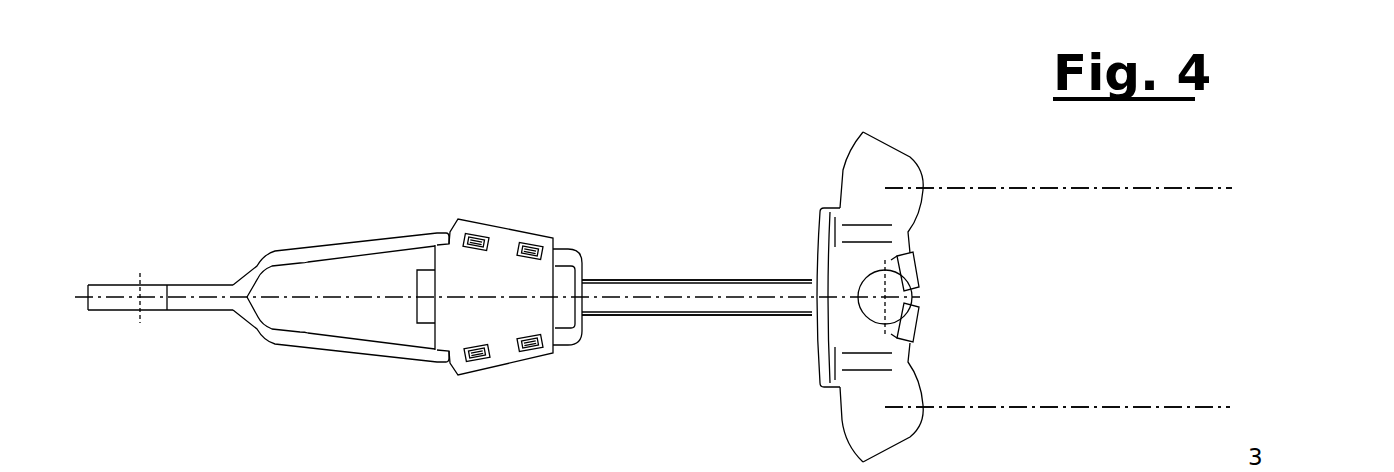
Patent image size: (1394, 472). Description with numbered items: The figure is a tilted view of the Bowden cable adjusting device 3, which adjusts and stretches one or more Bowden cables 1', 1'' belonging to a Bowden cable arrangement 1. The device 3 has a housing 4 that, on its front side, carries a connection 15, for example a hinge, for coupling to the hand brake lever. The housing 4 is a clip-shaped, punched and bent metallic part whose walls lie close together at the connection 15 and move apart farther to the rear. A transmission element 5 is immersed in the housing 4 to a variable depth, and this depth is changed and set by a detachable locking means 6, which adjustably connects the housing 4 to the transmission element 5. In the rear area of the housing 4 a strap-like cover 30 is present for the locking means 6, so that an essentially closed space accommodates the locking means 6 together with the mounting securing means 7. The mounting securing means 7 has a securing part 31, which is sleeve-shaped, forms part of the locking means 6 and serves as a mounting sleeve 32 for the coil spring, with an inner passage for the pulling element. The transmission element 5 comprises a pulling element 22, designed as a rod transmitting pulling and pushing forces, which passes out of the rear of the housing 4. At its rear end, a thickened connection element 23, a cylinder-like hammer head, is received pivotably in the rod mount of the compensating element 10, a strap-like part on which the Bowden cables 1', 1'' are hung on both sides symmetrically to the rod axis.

The Bowden cable 1 is at (1125, 259).
The Bowden cable 1' is at (1058, 225).
The Bowden cable 1'' is at (1057, 374).
The Bowden cable adjusting device 3 is at (470, 221).
The cover 30 is at (503, 254).
The housing 4 is at (353, 250).
The transmission element 5 is at (692, 234).
The detachable locking means 6 is at (590, 257).
The mounting securing means 7 is at (576, 232).
The compensating element 10 is at (870, 173).
The connection 15 is at (127, 266).
The pulling element 22 is at (705, 300).
The connection element 23 is at (892, 290).
The securing part 31 is at (361, 341).
The mounting sleeve 32 is at (418, 313).